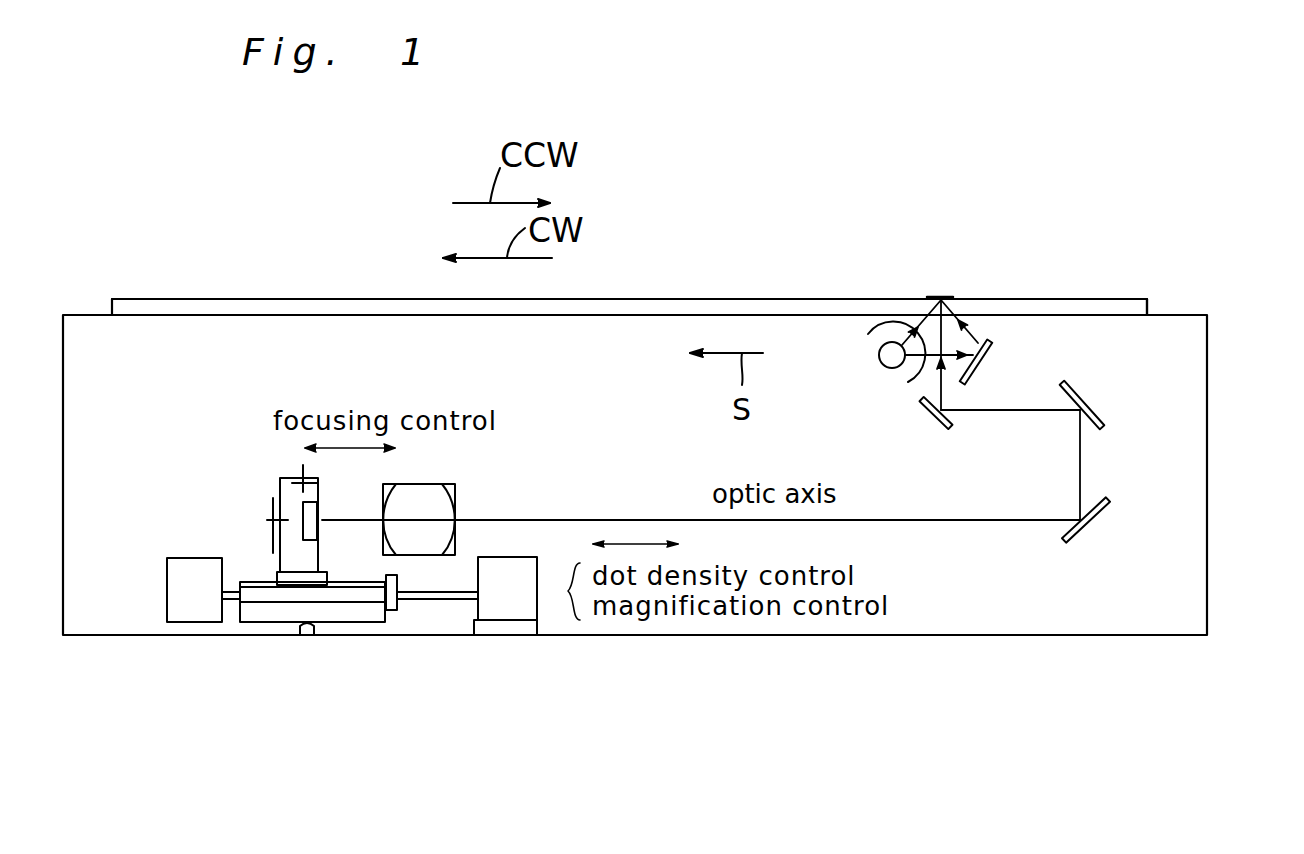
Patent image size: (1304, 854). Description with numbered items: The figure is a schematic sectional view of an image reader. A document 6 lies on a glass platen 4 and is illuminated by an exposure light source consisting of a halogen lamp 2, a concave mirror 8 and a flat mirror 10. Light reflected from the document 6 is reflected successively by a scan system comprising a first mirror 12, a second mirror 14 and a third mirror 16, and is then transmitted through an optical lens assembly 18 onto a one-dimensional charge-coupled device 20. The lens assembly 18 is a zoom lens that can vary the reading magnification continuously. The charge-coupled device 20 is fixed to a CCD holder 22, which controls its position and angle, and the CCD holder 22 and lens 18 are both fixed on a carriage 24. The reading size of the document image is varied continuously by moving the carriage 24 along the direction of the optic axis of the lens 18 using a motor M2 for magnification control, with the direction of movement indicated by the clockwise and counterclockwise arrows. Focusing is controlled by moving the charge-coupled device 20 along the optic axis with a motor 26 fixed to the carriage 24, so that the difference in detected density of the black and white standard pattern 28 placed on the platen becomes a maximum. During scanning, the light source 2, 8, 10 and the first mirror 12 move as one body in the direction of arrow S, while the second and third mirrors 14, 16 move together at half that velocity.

The halogen lamp 2 is at (888, 340).
The glass platen 4 is at (1127, 298).
The document 6 is at (1050, 298).
The concave mirror 8 is at (855, 363).
The flat mirror 10 is at (982, 340).
The first mirror 12 is at (943, 427).
The second mirror 14 is at (1100, 412).
The third mirror 16 is at (1107, 503).
The optical lens assembly 18 is at (430, 535).
The charge-coupled device 20 is at (322, 532).
The CCD holder 22 is at (273, 540).
The carriage 24 is at (387, 617).
The motor 26 is at (192, 598).
The standard pattern 28 is at (941, 298).
The motor M2 is at (508, 593).